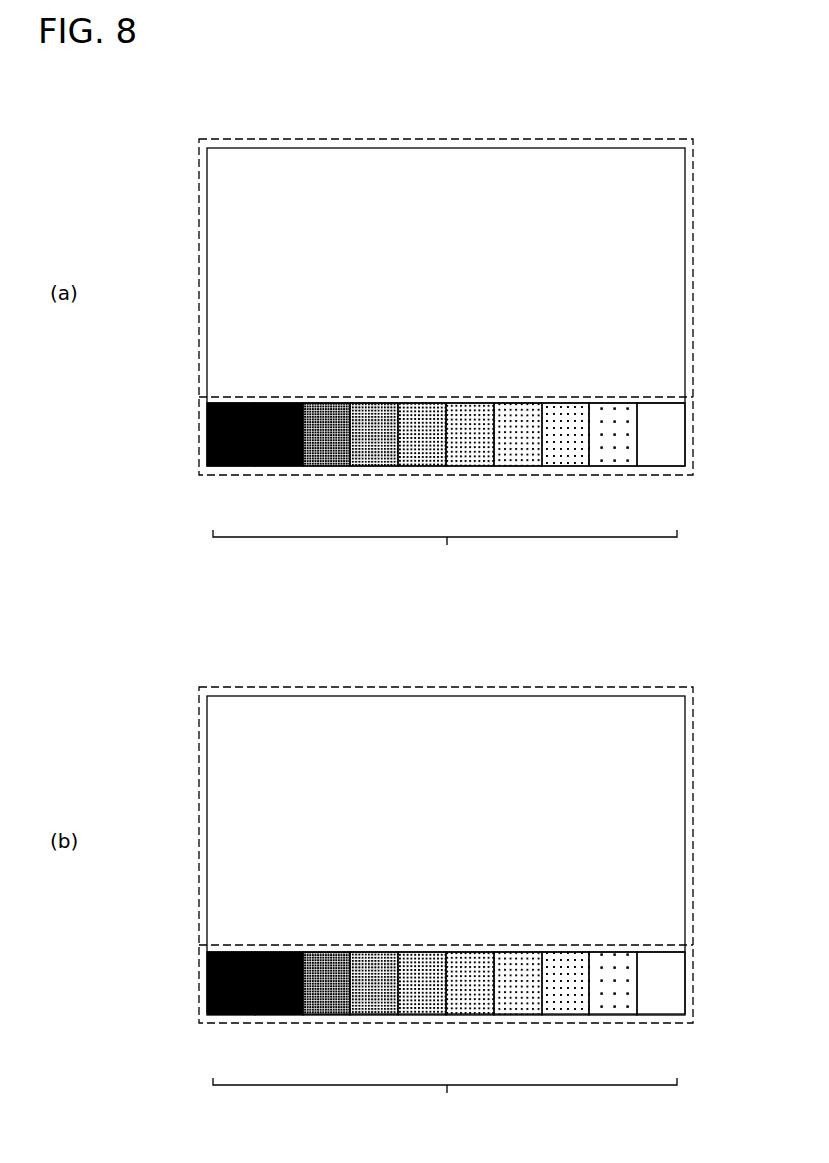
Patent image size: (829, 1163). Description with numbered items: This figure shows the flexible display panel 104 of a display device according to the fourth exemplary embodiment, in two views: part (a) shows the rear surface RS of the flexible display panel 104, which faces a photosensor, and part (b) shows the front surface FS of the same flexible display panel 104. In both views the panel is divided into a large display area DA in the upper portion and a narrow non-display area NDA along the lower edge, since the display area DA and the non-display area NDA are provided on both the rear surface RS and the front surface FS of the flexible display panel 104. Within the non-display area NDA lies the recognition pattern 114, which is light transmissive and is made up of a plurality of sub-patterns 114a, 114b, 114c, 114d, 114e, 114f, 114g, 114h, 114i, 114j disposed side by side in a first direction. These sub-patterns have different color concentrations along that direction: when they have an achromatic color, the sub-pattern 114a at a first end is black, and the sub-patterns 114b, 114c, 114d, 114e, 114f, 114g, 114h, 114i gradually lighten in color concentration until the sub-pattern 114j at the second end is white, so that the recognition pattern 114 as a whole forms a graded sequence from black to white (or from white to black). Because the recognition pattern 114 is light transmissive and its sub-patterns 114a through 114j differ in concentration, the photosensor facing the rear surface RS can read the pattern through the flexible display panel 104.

The flexible display panel 104 is at (428, 94).
The recognition pattern 114 is at (445, 824).
The sub-pattern 114a is at (229, 467).
The sub-pattern 114b is at (277, 467).
The sub-pattern 114c is at (324, 467).
The sub-pattern 114d is at (372, 467).
The sub-pattern 114e is at (420, 467).
The sub-pattern 114f is at (468, 467).
The sub-pattern 114g is at (516, 467).
The sub-pattern 114h is at (564, 467).
The sub-pattern 114i is at (611, 467).
The sub-pattern 114j is at (659, 467).
The display area DA is at (199, 268).
The non-display area NDA is at (199, 428).
The rear surface RS is at (666, 284).
The front surface FS is at (666, 820).